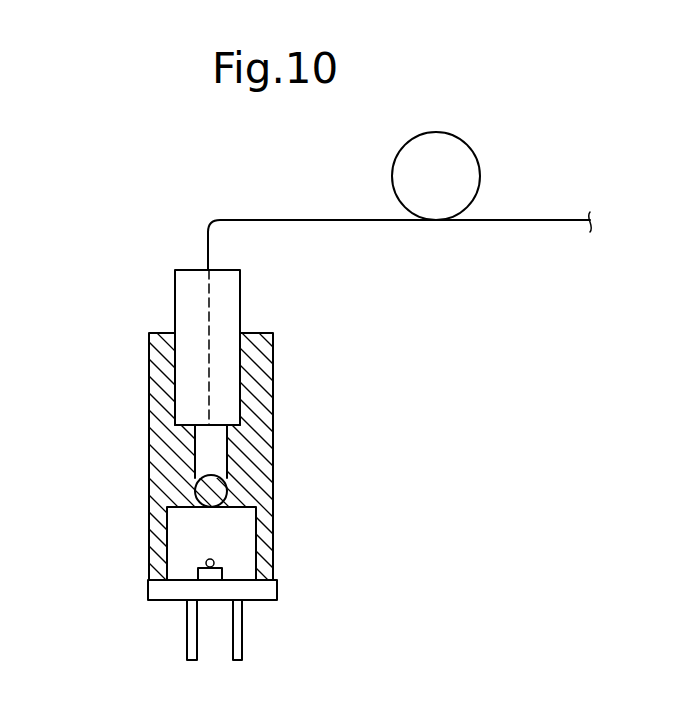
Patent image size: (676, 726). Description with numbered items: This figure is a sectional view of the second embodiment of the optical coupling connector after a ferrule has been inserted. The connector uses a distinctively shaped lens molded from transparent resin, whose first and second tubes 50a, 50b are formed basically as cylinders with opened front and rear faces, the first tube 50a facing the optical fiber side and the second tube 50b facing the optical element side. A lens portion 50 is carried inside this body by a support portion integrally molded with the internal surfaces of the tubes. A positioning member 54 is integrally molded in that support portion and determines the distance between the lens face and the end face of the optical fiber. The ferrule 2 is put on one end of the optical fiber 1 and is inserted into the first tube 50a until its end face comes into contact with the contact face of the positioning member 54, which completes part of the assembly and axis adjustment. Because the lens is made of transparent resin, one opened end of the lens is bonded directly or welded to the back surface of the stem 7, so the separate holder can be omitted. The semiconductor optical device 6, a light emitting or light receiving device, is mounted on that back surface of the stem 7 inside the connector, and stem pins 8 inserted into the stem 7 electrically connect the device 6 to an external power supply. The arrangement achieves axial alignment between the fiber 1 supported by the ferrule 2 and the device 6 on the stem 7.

The optical fiber 1 is at (405, 222).
The ferrule 2 is at (240, 293).
The semiconductor optical device 6 is at (197, 573).
The stem 7 is at (260, 592).
The stem pins 8 is at (183, 663).
The lens portion 50 is at (214, 488).
The first tube 50a is at (162, 403).
The second tube 50b is at (157, 552).
The positioning member 54 is at (193, 437).